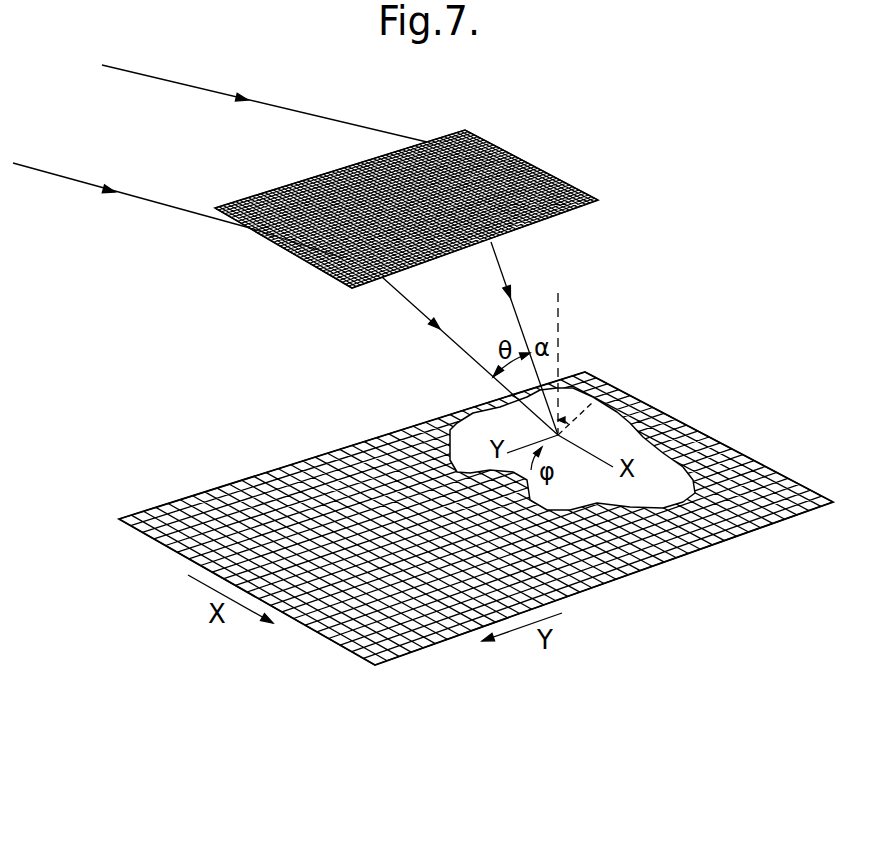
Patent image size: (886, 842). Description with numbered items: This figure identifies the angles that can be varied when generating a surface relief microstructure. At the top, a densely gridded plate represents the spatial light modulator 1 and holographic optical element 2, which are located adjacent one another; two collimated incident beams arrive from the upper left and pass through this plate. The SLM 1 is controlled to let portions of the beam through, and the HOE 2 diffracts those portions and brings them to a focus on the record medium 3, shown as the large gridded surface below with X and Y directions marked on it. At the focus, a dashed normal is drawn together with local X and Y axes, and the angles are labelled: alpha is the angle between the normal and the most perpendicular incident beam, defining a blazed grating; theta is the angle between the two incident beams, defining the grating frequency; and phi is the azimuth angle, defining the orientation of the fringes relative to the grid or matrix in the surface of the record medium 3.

The spatial light modulator 1 is at (421, 209).
The holographic optical element 2 is at (568, 182).
The record medium 3 is at (806, 514).